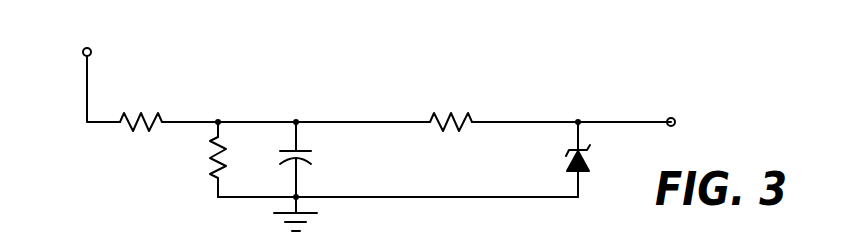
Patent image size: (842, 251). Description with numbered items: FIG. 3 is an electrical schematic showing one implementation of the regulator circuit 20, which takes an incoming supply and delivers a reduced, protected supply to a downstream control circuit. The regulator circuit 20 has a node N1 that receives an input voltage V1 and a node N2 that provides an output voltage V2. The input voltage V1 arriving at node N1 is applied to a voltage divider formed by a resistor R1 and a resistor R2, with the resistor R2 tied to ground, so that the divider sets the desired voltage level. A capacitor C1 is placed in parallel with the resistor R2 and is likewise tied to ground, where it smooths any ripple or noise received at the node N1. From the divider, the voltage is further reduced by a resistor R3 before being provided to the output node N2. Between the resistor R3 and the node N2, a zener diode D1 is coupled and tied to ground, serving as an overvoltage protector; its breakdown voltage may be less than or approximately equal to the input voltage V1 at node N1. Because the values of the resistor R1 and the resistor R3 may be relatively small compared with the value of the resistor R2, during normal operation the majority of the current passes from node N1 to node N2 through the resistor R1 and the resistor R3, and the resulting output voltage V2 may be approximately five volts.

The regulator circuit 20 is at (80, 164).
The node N1 is at (70, 62).
The node N2 is at (669, 123).
The input voltage V1 is at (65, 74).
The output voltage V2 is at (669, 136).
The resistor R1 is at (141, 112).
The resistor R2 is at (233, 157).
The resistor R3 is at (451, 108).
The capacitor C1 is at (311, 159).
The zener diode D1 is at (596, 159).